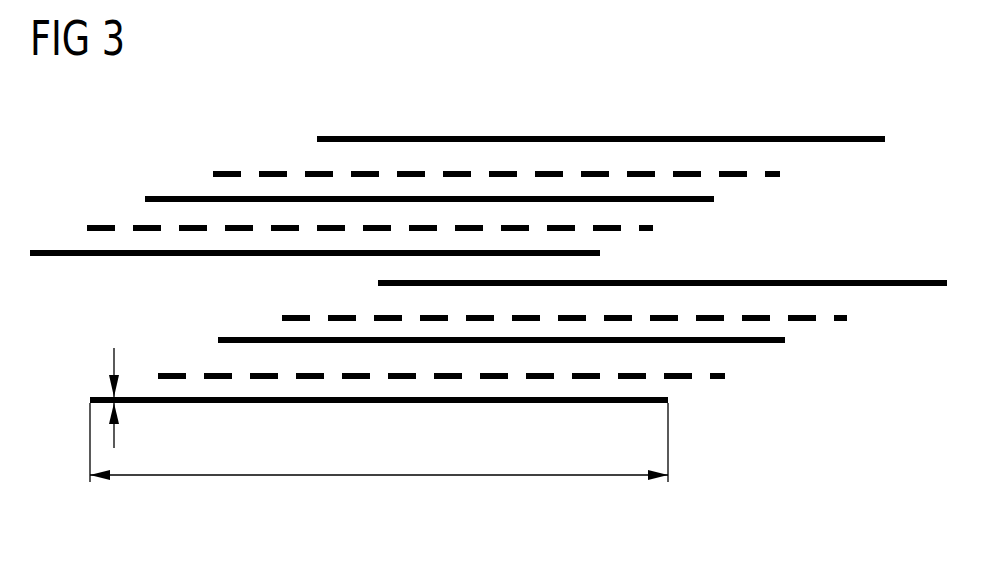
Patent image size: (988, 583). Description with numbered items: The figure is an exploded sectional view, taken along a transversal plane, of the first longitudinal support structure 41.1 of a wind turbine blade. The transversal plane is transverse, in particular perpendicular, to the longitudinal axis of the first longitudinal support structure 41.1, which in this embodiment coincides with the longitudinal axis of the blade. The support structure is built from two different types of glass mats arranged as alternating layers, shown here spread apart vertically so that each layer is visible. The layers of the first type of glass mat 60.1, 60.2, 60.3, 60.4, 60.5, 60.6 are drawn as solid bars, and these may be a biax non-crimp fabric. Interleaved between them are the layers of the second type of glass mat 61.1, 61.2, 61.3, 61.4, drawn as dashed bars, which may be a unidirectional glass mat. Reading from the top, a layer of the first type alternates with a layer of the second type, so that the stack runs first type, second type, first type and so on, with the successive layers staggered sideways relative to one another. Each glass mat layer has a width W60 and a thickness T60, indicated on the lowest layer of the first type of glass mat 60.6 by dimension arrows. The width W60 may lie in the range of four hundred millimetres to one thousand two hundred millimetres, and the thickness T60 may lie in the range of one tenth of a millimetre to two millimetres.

The first longitudinal support structure 41.1 is at (364, 118).
The first type of glass mat 60.1 is at (443, 135).
The first type of glass mat 60.2 is at (182, 196).
The first type of glass mat 60.3 is at (52, 250).
The first type of glass mat 60.4 is at (923, 287).
The first type of glass mat 60.5 is at (785, 344).
The first type of glass mat 60.6 is at (593, 404).
The second type of glass mat 61.1 is at (267, 171).
The second type of glass mat 61.2 is at (105, 225).
The second type of glass mat 61.3 is at (845, 322).
The second type of glass mat 61.4 is at (720, 379).
The thickness T60 is at (113, 360).
The width W60 is at (402, 477).